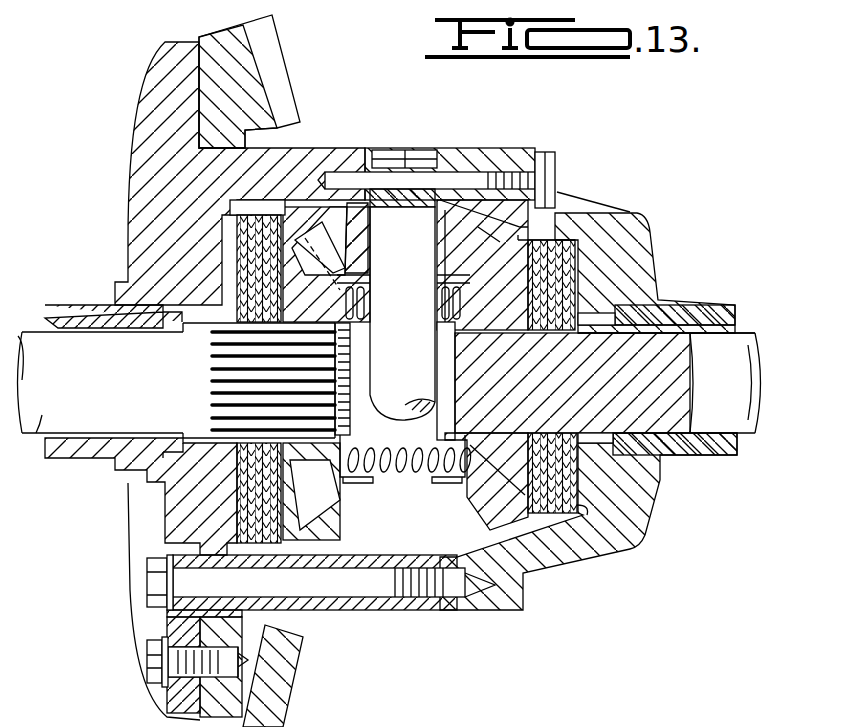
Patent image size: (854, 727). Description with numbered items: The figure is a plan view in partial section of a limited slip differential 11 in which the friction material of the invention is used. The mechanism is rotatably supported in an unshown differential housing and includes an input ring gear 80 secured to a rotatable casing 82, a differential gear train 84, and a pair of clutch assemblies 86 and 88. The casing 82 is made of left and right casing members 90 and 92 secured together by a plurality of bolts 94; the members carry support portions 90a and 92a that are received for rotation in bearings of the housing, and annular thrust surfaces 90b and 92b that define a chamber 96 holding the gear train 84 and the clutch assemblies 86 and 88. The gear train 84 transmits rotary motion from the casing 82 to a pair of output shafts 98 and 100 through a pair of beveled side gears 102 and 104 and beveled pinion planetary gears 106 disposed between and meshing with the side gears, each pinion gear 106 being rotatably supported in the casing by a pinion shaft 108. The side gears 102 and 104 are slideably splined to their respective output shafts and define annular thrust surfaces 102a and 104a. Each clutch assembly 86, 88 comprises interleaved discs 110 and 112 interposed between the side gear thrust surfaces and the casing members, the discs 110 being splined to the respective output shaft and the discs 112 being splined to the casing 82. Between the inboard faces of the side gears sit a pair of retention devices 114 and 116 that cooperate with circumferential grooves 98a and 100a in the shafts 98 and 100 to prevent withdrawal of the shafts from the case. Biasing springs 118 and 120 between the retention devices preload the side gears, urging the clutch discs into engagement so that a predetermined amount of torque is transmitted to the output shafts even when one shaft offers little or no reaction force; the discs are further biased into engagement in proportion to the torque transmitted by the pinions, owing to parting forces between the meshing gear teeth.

The limited slip differential 11 is at (692, 196).
The input ring gear 80 is at (277, 50).
The rotatable casing 82 is at (128, 118).
The differential gear train 84 is at (398, 523).
The clutch assembly 86 is at (257, 217).
The clutch assembly 88 is at (585, 215).
The left casing member 90 is at (128, 183).
The support portion 90a is at (68, 305).
The annular thrust surface 90b is at (245, 510).
The right casing member 92 is at (655, 255).
The support portion 92a is at (697, 463).
The annular thrust surface 92b is at (560, 466).
The bolts 94 is at (147, 578).
The chamber 96 is at (475, 538).
The output shaft 98 is at (42, 417).
The circumferential groove 98a is at (345, 360).
The output shaft 100 is at (743, 327).
The circumferential groove 100a is at (440, 328).
The beveled side gear 102 is at (293, 250).
The annular thrust surface 102a is at (287, 240).
The beveled side gear 104 is at (545, 197).
The annular thrust surface 104a is at (546, 317).
The beveled pinion planetary gear 106 is at (470, 215).
The pinion shaft 108 is at (440, 215).
The clutch disc 110 is at (573, 397).
The clutch disc 112 is at (537, 432).
The retention device 114 is at (355, 485).
The retention device 116 is at (455, 483).
The biasing spring 118 is at (440, 293).
The biasing spring 120 is at (403, 472).